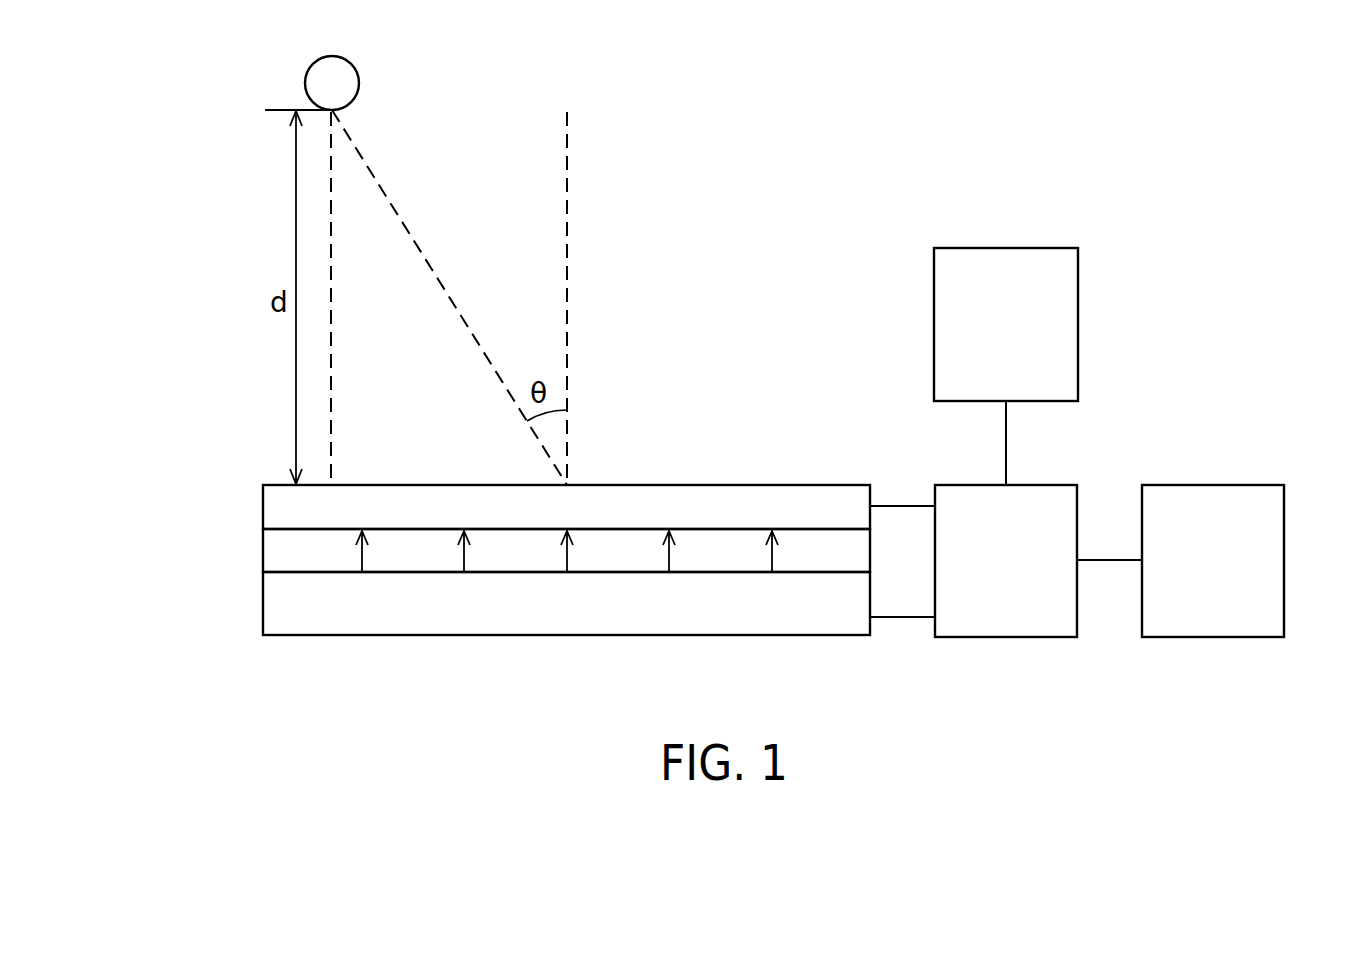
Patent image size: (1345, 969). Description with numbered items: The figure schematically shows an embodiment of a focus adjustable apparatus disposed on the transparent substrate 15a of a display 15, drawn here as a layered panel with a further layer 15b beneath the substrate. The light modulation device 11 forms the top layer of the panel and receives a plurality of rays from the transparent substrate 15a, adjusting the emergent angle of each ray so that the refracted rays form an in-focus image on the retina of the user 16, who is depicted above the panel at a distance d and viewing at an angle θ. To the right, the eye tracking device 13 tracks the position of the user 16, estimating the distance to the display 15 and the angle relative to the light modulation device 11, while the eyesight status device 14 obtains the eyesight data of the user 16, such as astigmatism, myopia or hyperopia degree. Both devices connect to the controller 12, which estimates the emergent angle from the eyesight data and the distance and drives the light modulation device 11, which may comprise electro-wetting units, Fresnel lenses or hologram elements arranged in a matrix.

The light modulation device 11 is at (263, 503).
The controller 12 is at (1058, 485).
The eye tracking device 13 is at (1058, 248).
The eyesight status device 14 is at (1265, 485).
The display 15 is at (489, 583).
The transparent substrate 15a is at (263, 553).
The panel display layer 15b is at (263, 610).
The user 16 is at (305, 83).